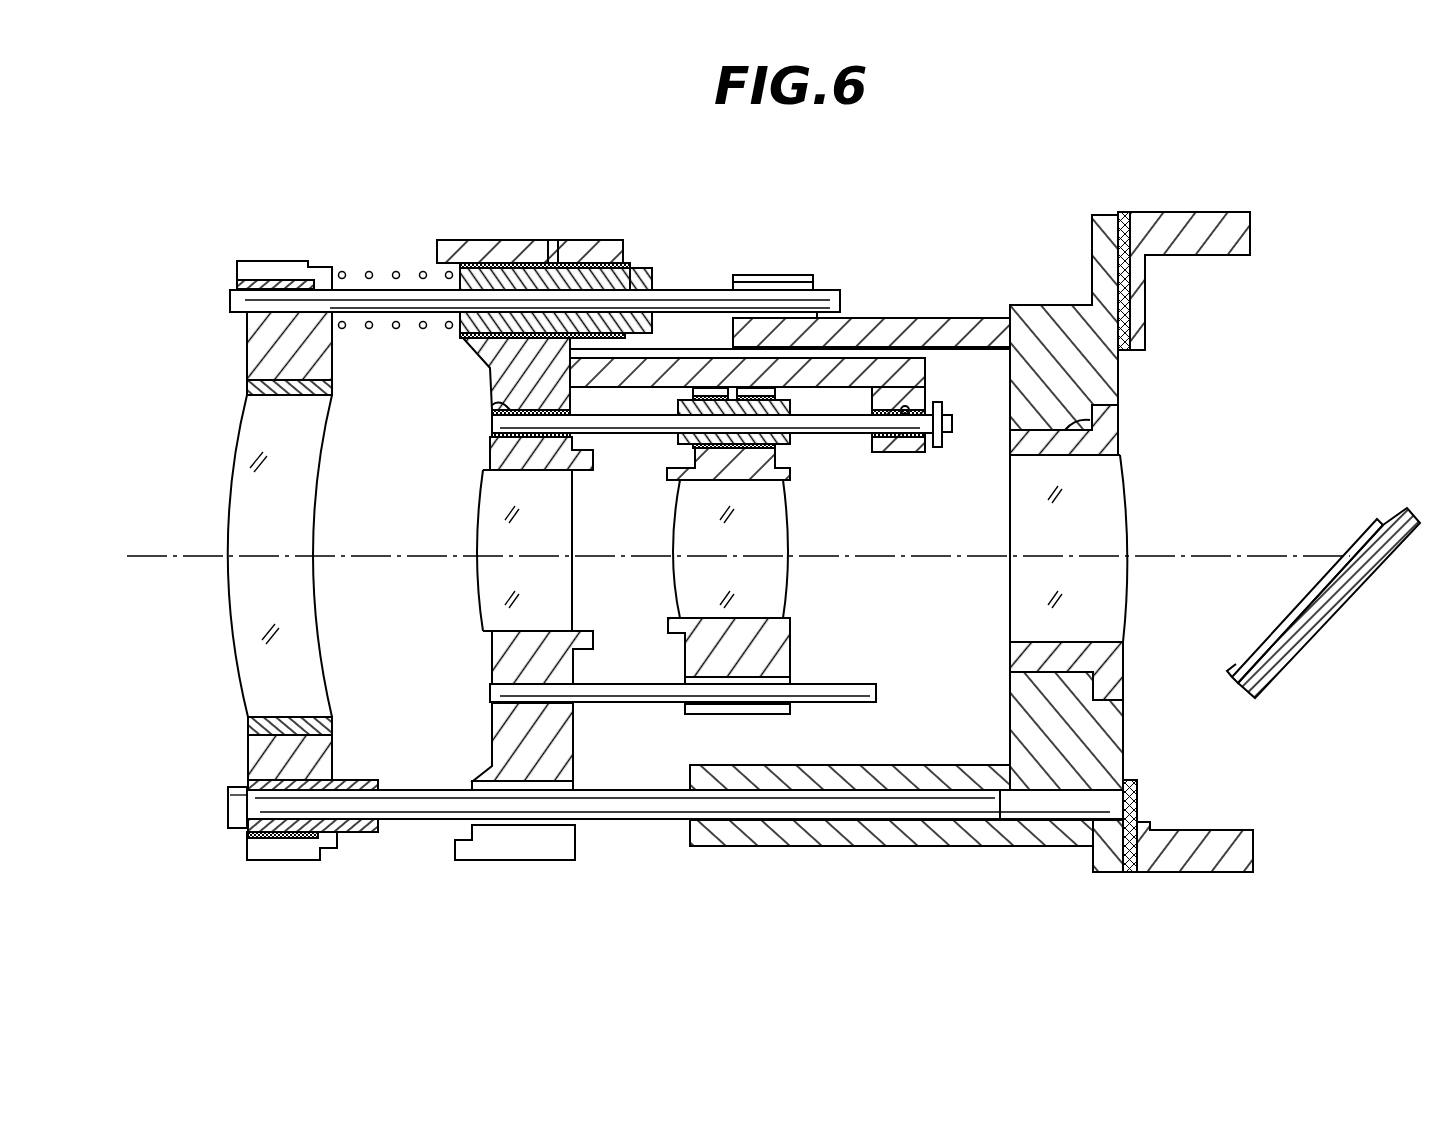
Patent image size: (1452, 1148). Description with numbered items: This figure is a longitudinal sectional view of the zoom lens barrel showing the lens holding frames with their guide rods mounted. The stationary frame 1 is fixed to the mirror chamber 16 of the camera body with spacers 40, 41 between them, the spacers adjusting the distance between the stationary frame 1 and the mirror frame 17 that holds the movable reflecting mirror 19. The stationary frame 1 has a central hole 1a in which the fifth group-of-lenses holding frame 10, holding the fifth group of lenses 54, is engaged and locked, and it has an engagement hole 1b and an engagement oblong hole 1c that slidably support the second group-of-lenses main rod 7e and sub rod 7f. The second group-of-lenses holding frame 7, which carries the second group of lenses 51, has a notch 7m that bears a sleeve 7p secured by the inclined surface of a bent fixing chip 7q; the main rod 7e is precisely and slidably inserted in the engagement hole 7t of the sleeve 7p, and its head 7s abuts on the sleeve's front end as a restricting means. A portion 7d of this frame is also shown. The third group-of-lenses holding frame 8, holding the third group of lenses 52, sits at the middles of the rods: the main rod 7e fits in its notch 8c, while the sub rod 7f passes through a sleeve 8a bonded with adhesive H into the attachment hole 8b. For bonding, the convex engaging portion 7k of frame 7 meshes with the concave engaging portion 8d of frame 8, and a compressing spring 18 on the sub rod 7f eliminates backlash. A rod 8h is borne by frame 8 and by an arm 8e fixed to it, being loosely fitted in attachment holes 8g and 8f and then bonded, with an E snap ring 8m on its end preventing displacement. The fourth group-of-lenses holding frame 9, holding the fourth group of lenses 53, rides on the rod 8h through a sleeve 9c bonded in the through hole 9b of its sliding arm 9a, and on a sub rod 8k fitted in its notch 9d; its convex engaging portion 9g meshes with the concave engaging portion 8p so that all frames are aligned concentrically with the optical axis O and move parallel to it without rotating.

The stationary frame 1 is at (1062, 312).
The hole 1a is at (1070, 430).
The engagement hole 1b is at (800, 840).
The engagement oblong hole 1c is at (795, 287).
The second group-of-lenses holding frame 7 is at (248, 345).
The upper bearing portion of first lens frame 7d is at (237, 283).
The second group-of-lenses main rod 7e is at (425, 812).
The second group-of-lenses sub rod 7f is at (402, 300).
The convex engaging portion 7k is at (325, 262).
The notch 7m is at (270, 782).
The sleeve 7p is at (348, 838).
The fixing chip 7q is at (268, 852).
The head 7s is at (225, 805).
The engagement hole 7t is at (370, 832).
The third group-of-lenses holding frame 8 is at (490, 390).
The sleeve 8a is at (633, 283).
The attachment hole 8b is at (497, 280).
The notch 8c is at (578, 845).
The concave engaging portion 8d is at (440, 258).
The arm 8e is at (897, 368).
The attachment hole 8f is at (930, 410).
The attachment hole 8g is at (490, 415).
The rod 8h is at (848, 434).
The sub rod 8k is at (858, 688).
The E snap ring 8m is at (945, 450).
The concave engaging portion 8p is at (590, 480).
The fourth group-of-lenses holding frame 9 is at (785, 658).
The sliding arm 9a is at (778, 458).
The through hole 9b is at (783, 490).
The sleeve 9c is at (678, 407).
The notch 9d is at (777, 714).
The convex engaging portion 9g is at (665, 478).
The fifth group-of-lenses holding frame 10 is at (1125, 443).
The mirror chamber 16 is at (1205, 228).
The mirror frame 17 is at (1380, 560).
The compressing spring 18 is at (369, 271).
The movable reflecting mirror 19 is at (1290, 628).
The spacer 40 is at (1137, 543).
The spacer 41 is at (1124, 222).
The second group of lenses 51 is at (240, 676).
The third group of lenses 52 is at (478, 606).
The fourth group of lenses 53 is at (676, 605).
The fifth group of lenses 54 is at (1008, 608).
The adhesive H is at (563, 262).
The optical axis O is at (150, 558).